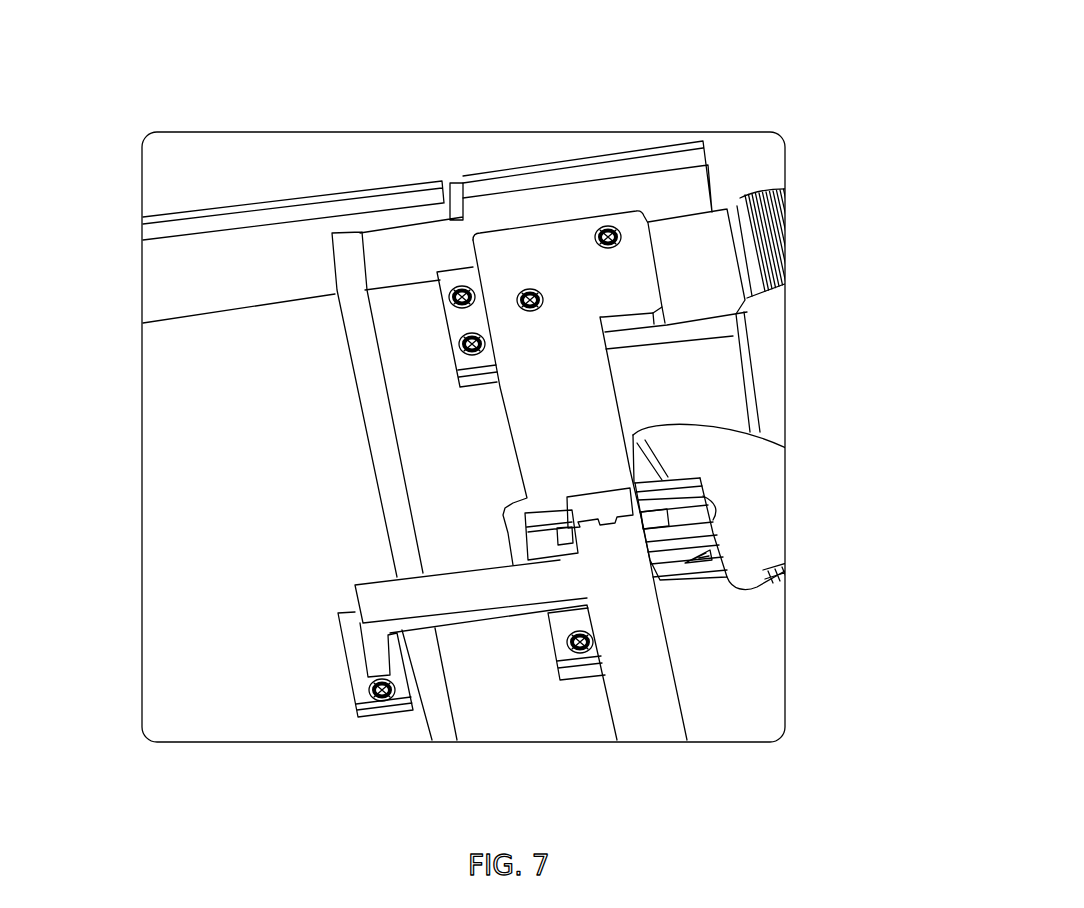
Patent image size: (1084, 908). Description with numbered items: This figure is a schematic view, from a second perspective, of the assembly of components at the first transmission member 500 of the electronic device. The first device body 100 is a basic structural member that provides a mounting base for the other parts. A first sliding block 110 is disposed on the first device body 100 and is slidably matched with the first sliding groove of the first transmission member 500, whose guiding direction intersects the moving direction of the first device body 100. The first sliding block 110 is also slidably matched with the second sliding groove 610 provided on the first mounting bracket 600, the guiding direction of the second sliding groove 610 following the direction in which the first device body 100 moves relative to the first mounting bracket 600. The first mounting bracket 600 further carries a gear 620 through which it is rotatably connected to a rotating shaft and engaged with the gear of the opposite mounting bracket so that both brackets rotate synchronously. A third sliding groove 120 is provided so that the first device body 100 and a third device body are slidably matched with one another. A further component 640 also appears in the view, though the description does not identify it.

The first device body 100 is at (273, 350).
The first sliding block 110 is at (597, 500).
The third sliding groove 120 is at (345, 247).
The first transmission member 500 is at (703, 440).
The first mounting bracket 600 is at (572, 427).
The second sliding groove 610 is at (525, 532).
The gear 620 is at (552, 178).
The threaded cylinder 640 is at (760, 193).